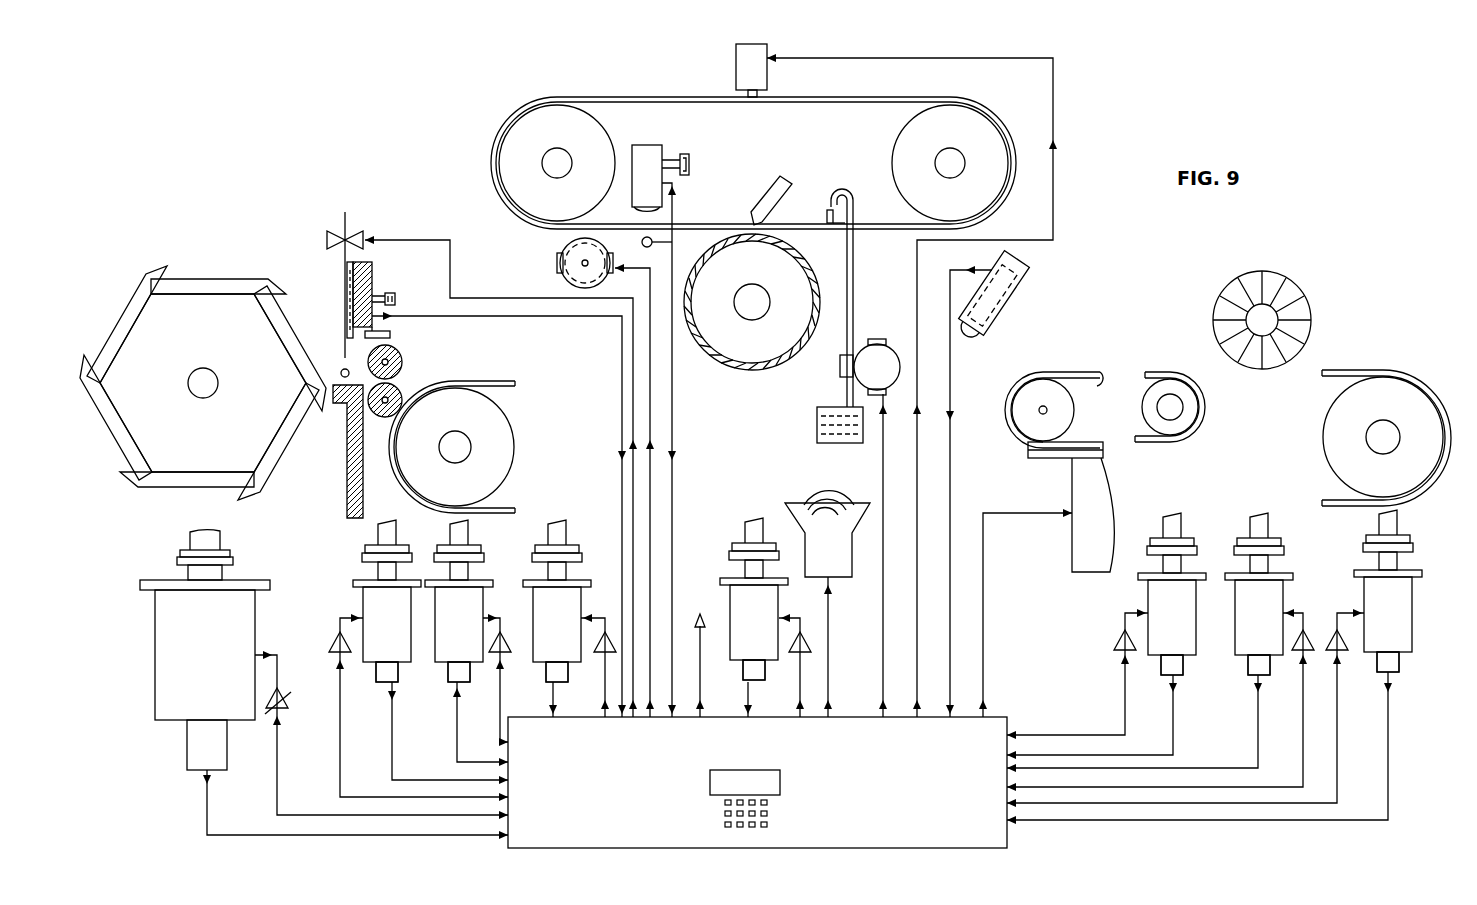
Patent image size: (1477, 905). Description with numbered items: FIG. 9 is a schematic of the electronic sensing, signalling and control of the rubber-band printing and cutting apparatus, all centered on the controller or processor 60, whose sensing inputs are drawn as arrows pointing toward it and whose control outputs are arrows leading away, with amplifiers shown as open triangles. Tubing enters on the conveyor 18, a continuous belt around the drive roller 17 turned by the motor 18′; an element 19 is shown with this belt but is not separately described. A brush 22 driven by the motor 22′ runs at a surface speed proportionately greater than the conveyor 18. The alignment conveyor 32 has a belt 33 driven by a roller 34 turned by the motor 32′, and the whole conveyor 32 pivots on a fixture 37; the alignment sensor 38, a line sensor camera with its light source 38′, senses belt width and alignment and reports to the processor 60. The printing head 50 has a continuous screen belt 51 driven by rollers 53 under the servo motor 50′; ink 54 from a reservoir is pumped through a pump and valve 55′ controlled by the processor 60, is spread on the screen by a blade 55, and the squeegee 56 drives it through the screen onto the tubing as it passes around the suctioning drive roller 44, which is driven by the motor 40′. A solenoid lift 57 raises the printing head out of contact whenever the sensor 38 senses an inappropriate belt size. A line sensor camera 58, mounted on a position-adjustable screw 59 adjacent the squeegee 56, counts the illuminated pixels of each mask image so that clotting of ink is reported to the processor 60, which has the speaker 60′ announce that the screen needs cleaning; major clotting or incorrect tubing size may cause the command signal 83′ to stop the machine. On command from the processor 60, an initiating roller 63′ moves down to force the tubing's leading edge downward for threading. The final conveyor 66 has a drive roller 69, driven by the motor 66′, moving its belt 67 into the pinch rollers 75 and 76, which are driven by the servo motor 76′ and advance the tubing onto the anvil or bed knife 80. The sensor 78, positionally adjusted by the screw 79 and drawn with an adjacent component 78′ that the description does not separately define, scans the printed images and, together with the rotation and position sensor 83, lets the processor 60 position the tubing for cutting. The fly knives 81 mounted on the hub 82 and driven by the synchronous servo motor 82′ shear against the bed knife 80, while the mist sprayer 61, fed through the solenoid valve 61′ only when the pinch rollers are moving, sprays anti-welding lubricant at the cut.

The drive roller 17 is at (1342, 422).
The conveyor 18 is at (1360, 367).
The servo motor 18′ is at (1370, 587).
The web 19 is at (1339, 377).
The brush 22 is at (1300, 312).
The motor 22′ is at (1268, 607).
The alignment conveyor 32 is at (1162, 362).
The servo motor 32′ is at (1162, 585).
The belt 33 is at (1098, 386).
The roller 34 is at (1153, 416).
The fixture 37 is at (1081, 473).
The alignment sensor 38 is at (1022, 264).
The light source 38′ is at (1008, 310).
The servo motor 40′ is at (767, 606).
The suctioning drive roller 44 is at (740, 368).
The printing head 50 is at (614, 96).
The servo motor 50′ is at (574, 602).
The screen belt 51 is at (728, 226).
The rollers 53 is at (597, 157).
The elastomeric polymer ink 54 is at (846, 232).
The blade 55 is at (826, 214).
The pump and valve 55′ is at (841, 368).
The squeegee 56 is at (783, 184).
The solenoid lift 57 is at (735, 60).
The line sensor camera 58 is at (650, 158).
The position adjustable screw 59 is at (689, 160).
The controller 60 is at (995, 737).
The speaker 60′ is at (800, 512).
The mist sprayer 61 is at (343, 355).
The solenoid valve 61′ is at (332, 240).
The initiating roller 63′ is at (585, 240).
The final conveyor 66 is at (470, 377).
The servo motor 66′ is at (461, 597).
The belt 67 is at (503, 392).
The drive roller 69 is at (488, 463).
The nip roller 75 is at (403, 364).
The nip roller 76 is at (402, 402).
The servo motor 76′ is at (372, 602).
The sensor 78 is at (373, 277).
The plate 78′ is at (347, 304).
The screw 79 is at (393, 297).
The bed knife 80 is at (348, 467).
The fly knives 81 is at (237, 287).
The hub 82 is at (273, 398).
The servo motor 82′ is at (240, 649).
The sensor 83 is at (215, 740).
The command signal 83′ is at (710, 652).